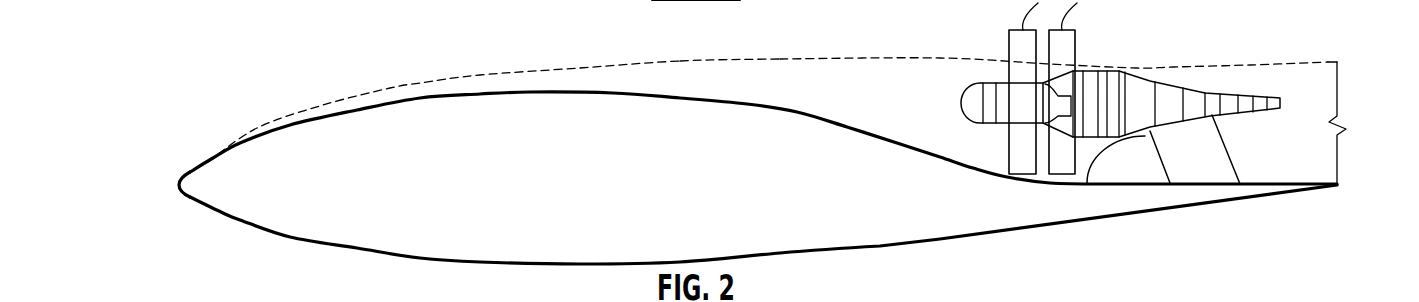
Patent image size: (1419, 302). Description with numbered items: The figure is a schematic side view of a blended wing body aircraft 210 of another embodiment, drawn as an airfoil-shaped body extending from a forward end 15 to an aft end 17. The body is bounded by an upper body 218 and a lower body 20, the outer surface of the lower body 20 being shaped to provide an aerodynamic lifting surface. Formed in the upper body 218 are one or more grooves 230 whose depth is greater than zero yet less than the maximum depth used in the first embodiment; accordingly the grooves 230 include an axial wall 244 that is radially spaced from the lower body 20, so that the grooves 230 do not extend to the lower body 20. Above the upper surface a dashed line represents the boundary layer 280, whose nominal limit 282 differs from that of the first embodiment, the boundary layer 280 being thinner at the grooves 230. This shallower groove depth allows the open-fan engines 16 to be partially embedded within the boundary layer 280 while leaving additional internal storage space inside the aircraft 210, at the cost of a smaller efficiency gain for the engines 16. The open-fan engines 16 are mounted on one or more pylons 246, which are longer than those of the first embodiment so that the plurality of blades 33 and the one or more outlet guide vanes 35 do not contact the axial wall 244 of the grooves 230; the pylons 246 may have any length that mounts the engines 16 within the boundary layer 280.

The blended wing body aircraft 210 is at (249, 79).
The upper body 218 is at (402, 102).
The lower body 20 is at (325, 247).
The forward end 15 is at (166, 182).
The aft end 17 is at (1347, 192).
The boundary layer 280 is at (751, 44).
The nominal limit 282 is at (679, 60).
The grooves 230 is at (919, 102).
The open-fan engines 16 is at (1128, 73).
The pylons 246 is at (1087, 184).
The axial wall 244 is at (1265, 184).
The blades 33 is at (1003, 301).
The outlet guide vanes 35 is at (1040, 301).